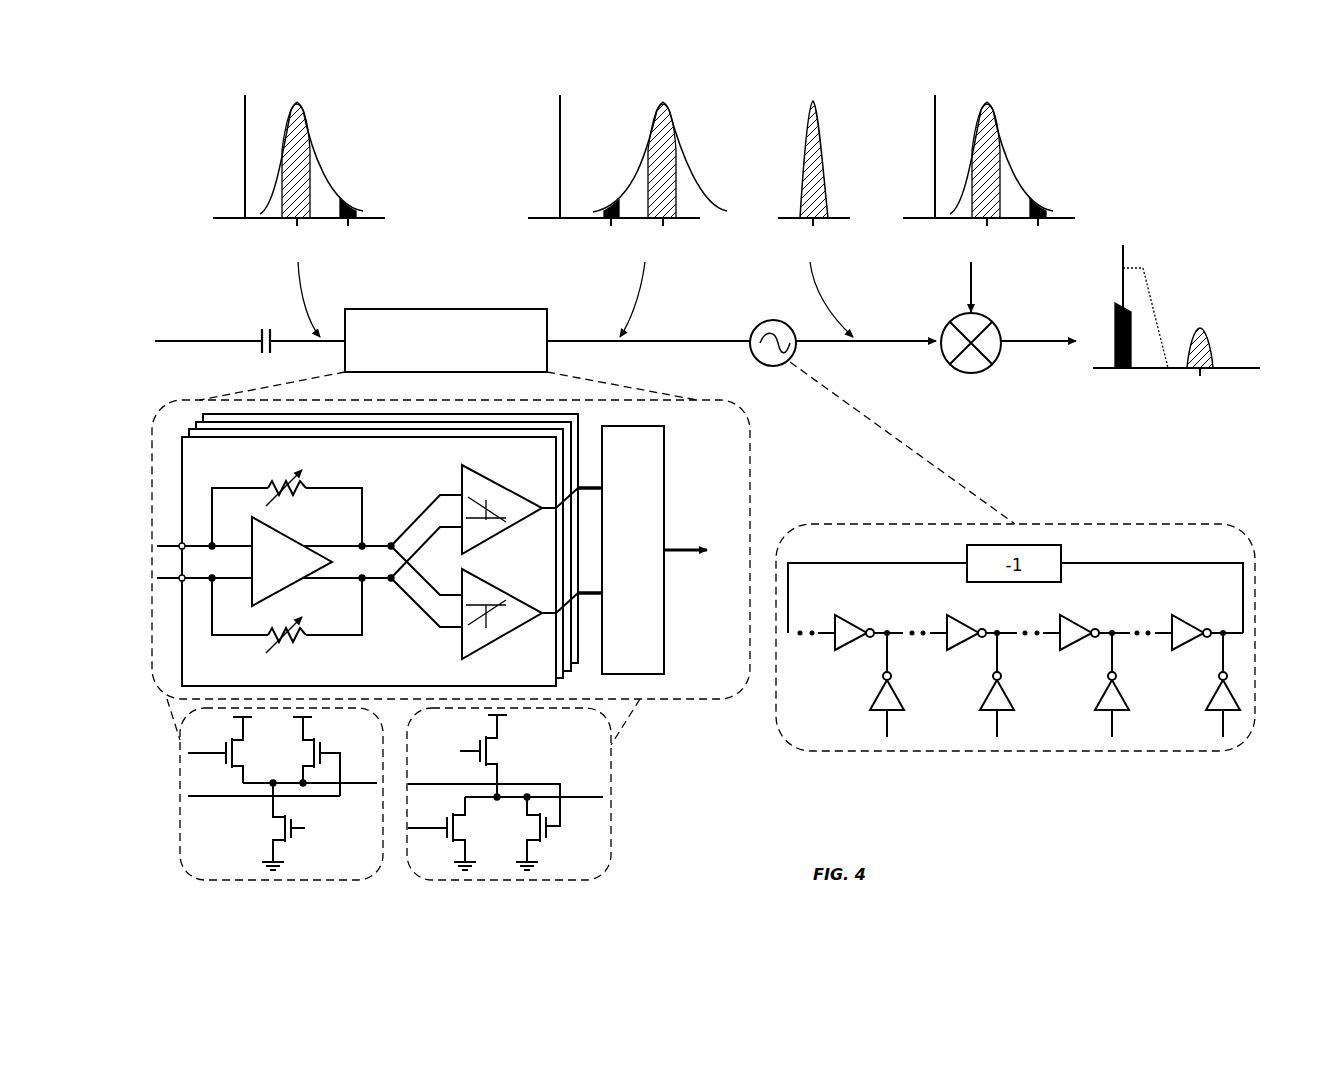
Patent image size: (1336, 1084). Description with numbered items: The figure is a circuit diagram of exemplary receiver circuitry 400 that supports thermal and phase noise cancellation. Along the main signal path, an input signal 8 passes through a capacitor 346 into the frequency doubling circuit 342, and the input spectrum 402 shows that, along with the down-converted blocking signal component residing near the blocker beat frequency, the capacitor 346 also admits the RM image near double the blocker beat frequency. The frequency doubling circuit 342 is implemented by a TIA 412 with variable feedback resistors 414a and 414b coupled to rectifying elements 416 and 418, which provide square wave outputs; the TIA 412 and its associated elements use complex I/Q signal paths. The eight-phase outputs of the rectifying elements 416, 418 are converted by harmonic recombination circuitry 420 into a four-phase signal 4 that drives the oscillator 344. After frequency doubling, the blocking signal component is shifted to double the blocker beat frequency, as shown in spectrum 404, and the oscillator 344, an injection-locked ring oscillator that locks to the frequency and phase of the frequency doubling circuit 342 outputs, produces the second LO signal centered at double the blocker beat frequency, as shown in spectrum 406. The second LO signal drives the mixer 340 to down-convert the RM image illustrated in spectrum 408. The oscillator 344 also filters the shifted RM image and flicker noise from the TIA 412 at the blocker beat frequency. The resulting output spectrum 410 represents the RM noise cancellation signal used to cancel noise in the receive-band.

The receiver circuitry 400 is at (1168, 145).
The input spectrum at frequency doubling circuit 402 is at (333, 152).
The frequency-doubled spectrum 404 is at (583, 152).
The second LO signal spectrum 406 is at (827, 152).
The RM image spectrum 408 is at (1026, 152).
The RM noise cancellation signal 410 is at (1166, 301).
The input signal 8 is at (180, 350).
The capacitor 346 is at (262, 334).
The frequency doubling circuit 342 is at (393, 309).
The oscillator 344 is at (755, 329).
The mixer 340 is at (946, 323).
The TIA 412 is at (262, 573).
The variable feedback resistor 414a is at (272, 484).
The variable feedback resistor 414b is at (306, 642).
The rectifying element 416 is at (458, 482).
The rectifying element 418 is at (458, 645).
The harmonic recombination circuitry 420 is at (668, 633).
The output bus 4 is at (678, 556).